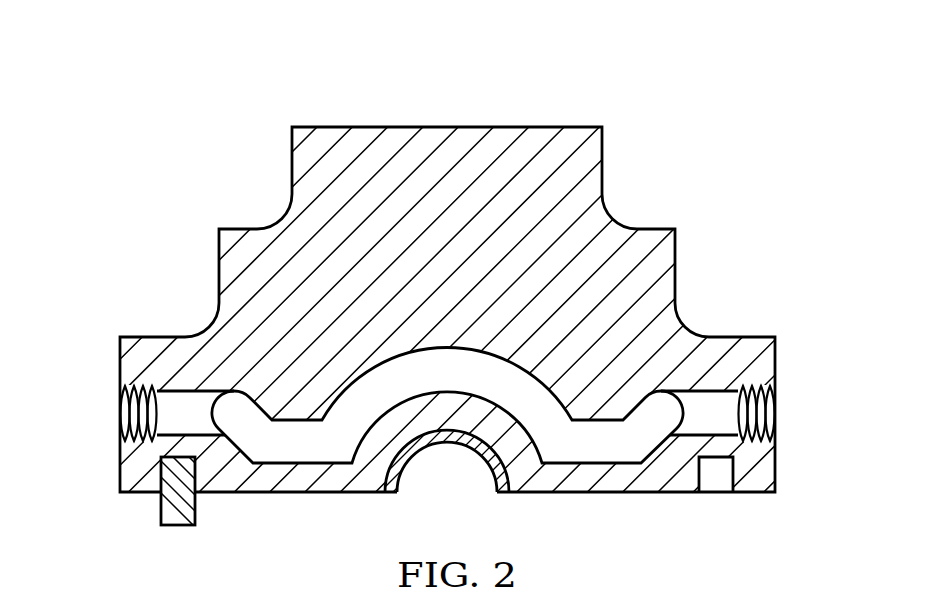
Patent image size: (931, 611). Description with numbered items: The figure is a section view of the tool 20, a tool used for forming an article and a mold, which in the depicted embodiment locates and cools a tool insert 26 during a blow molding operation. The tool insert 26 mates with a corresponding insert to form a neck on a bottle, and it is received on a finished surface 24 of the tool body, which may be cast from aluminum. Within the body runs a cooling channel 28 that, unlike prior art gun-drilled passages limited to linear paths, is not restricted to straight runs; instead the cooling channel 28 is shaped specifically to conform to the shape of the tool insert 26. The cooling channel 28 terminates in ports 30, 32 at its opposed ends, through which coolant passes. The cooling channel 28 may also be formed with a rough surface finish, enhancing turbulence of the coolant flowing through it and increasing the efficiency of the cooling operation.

The tool 20 is at (536, 88).
The finished surface 24 is at (486, 462).
The tool insert 26 is at (401, 469).
The cooling channel 28 is at (613, 453).
The port 30 is at (775, 418).
The port 32 is at (118, 420).